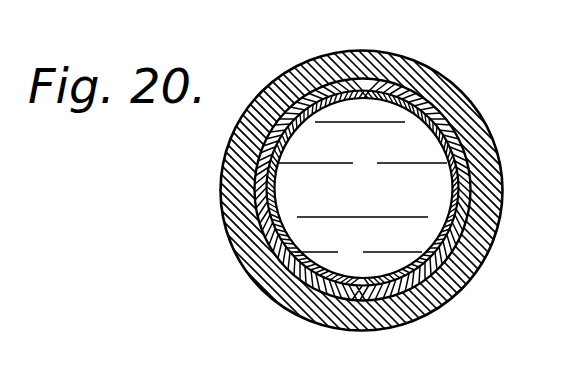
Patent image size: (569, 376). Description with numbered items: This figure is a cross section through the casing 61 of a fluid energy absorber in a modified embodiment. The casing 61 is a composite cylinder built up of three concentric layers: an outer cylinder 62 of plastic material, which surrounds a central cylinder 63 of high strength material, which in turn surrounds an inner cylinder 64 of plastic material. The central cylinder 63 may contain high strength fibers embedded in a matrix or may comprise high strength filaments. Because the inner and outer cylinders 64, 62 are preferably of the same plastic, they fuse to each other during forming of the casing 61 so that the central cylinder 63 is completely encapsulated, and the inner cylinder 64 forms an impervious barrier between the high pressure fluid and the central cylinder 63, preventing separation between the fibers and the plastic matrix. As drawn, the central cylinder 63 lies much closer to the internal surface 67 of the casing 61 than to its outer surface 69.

The outer surface 69 is at (424, 65).
The casing 61 is at (485, 117).
The outer cylinder 62 is at (480, 173).
The central cylinder 63 is at (452, 245).
The internal surface 67 is at (290, 133).
The inner cylinder 64 is at (452, 198).